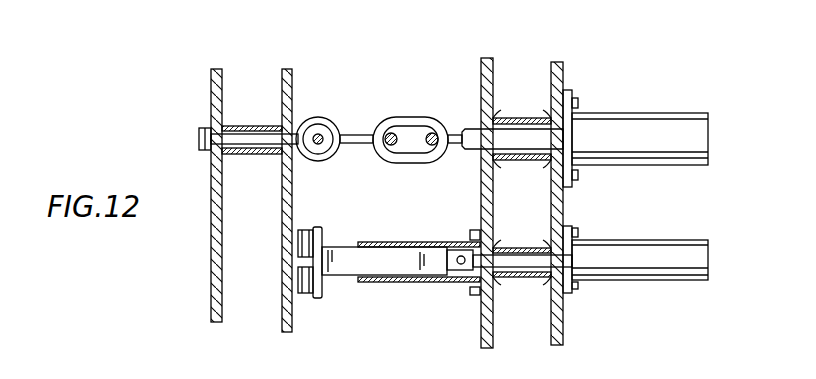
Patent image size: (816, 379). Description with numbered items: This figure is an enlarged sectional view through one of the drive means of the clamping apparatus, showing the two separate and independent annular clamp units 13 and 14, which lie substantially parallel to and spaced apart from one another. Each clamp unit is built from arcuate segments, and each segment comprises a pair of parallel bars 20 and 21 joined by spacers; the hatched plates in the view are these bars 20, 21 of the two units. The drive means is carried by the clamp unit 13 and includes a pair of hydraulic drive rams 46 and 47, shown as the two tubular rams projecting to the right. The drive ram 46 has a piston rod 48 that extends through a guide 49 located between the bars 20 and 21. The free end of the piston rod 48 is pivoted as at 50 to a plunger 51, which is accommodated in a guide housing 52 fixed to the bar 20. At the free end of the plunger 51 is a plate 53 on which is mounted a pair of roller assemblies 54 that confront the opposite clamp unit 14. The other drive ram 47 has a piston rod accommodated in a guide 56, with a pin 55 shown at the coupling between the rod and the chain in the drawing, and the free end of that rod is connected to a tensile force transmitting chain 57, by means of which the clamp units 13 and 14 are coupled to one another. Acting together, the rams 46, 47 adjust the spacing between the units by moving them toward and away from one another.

The clamp unit 13 is at (578, 72).
The clamp unit 14 is at (193, 85).
The bar 20 is at (481, 340).
The bar 21 is at (563, 340).
The hydraulic drive ram 46 is at (642, 270).
The hydraulic drive ram 47 is at (655, 152).
The piston rod 48 is at (523, 278).
The guide 49 is at (518, 250).
The pivot 50 is at (460, 257).
The plunger 51 is at (392, 283).
The guide housing 52 is at (373, 242).
The plate 53 is at (320, 228).
The roller assemblies 54 is at (294, 283).
The pivot pin 55 is at (518, 118).
The guide 56 is at (513, 163).
The tensile force transmitting chain 57 is at (358, 118).